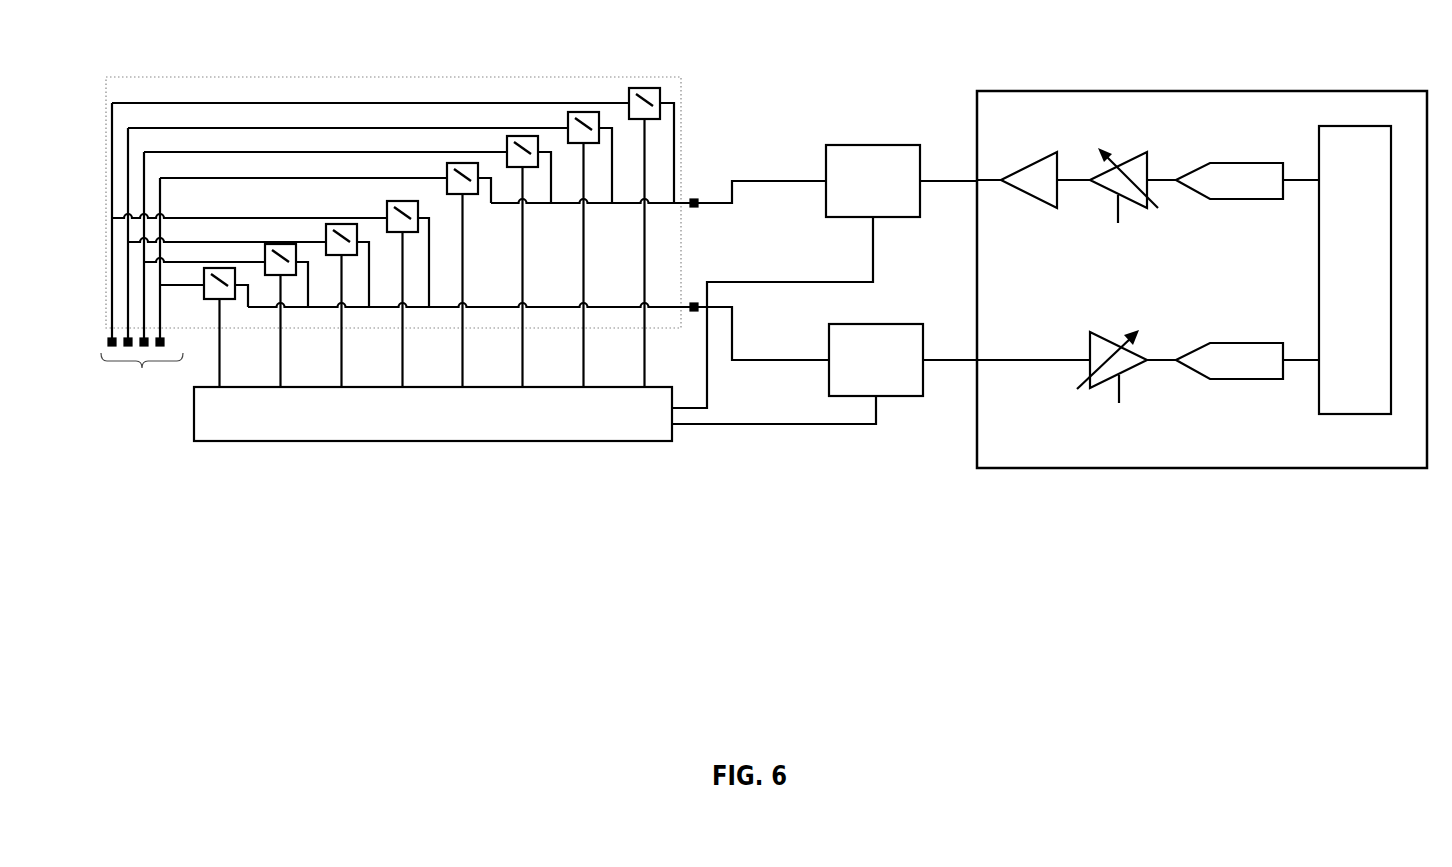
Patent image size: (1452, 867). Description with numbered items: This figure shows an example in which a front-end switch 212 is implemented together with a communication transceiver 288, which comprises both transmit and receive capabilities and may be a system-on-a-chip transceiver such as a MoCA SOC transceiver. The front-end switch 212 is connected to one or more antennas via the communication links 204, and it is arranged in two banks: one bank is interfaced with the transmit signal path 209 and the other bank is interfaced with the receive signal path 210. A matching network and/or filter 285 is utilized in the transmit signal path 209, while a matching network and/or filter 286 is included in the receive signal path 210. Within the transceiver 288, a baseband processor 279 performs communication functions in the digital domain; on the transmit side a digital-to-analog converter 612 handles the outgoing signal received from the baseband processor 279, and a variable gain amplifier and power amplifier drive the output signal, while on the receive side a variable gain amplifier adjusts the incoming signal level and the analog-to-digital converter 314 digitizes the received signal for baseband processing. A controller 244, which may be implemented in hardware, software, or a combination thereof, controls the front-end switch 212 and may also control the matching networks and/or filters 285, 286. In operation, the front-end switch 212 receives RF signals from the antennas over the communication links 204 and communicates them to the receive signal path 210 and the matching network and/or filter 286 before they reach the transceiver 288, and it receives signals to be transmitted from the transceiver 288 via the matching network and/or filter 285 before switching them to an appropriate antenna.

The front-end switch 212 is at (379, 56).
The communication links 204 is at (142, 254).
The controller 244 is at (537, 428).
The transmit signal path 209 is at (760, 171).
The receive signal path 210 is at (761, 354).
The matching network and/or filter 285 is at (893, 194).
The matching network and/or filter 286 is at (896, 374).
The communication transceiver 288 is at (1288, 448).
The baseband processor 279 is at (1374, 294).
The DAC 612 is at (1228, 163).
The analog-to-digital converter 314 is at (1227, 343).